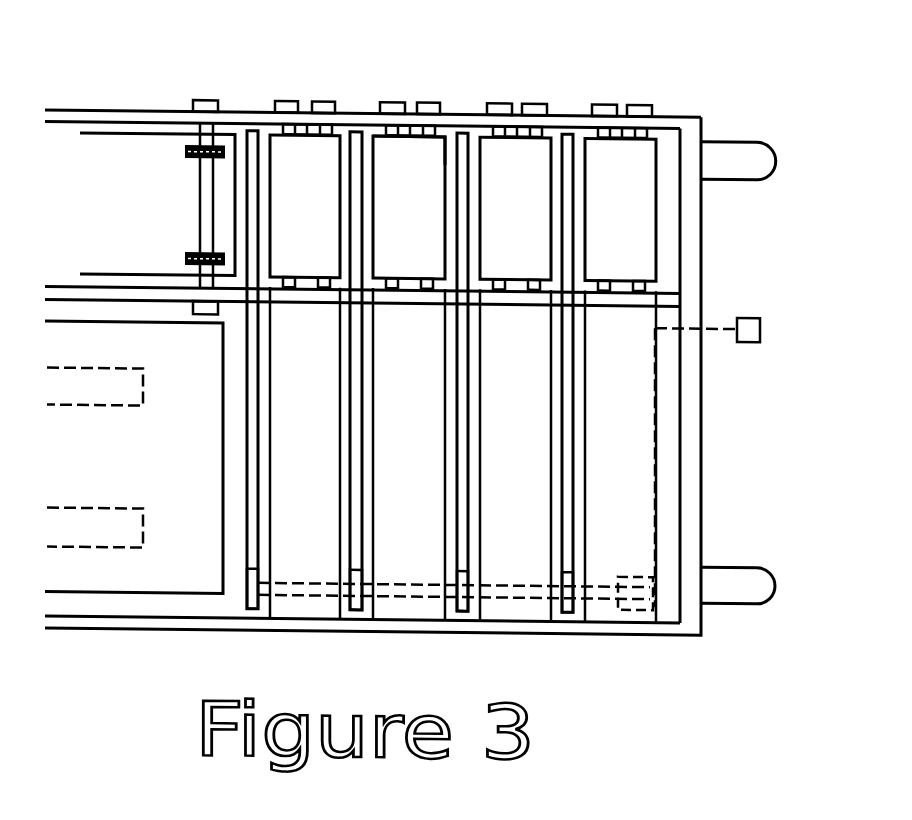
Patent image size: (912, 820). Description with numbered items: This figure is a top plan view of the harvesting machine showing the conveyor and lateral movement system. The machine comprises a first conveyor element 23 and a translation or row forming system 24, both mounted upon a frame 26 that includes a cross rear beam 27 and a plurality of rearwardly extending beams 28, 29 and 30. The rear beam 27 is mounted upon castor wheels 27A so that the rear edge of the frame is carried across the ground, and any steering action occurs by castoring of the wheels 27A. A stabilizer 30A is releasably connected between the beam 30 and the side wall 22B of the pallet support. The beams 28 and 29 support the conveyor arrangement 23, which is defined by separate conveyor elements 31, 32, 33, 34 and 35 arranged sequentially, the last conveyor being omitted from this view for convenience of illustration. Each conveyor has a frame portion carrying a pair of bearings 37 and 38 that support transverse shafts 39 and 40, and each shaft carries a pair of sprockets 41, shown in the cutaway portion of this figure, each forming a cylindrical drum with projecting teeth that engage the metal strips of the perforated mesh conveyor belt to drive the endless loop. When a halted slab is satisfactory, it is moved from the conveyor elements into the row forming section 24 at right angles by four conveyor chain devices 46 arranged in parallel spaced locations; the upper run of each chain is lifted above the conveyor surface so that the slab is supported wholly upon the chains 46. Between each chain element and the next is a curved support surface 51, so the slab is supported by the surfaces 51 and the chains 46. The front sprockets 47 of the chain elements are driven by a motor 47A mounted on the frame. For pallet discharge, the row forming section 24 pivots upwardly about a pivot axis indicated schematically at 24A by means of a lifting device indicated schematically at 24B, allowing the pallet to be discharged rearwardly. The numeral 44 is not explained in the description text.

The side wall of the pallet support 22B is at (141, 504).
The first conveyor element 23 is at (439, 106).
The row forming system 24 is at (416, 373).
The pivot axis 24A is at (723, 436).
The lifting device 24B is at (790, 341).
The frame 26 is at (733, 376).
The cross rear beam 27 is at (417, 372).
The castor wheels 27A is at (775, 342).
The rearwardly extending beam 28 is at (373, 70).
The rearwardly extending beam 29 is at (362, 326).
The rearwardly extending beam 30 is at (461, 621).
The stabilizer 30A is at (281, 625).
The conveyor element 31 is at (141, 161).
The conveyor element 32 is at (311, 139).
The conveyor element 33 is at (417, 139).
The conveyor element 34 is at (519, 146).
The conveyor element 35 is at (627, 146).
The bearing 37 is at (257, 78).
The bearing 38 is at (348, 80).
The transverse shaft 39 is at (287, 281).
The transverse shaft 40 is at (322, 281).
The sprockets 41 is at (183, 206).
The cassette guide 44 is at (547, 144).
The conveyor chain devices 46 is at (449, 372).
The front sprocket 47 is at (454, 628).
The motor 47A is at (679, 628).
The curved support surface 51 is at (454, 618).